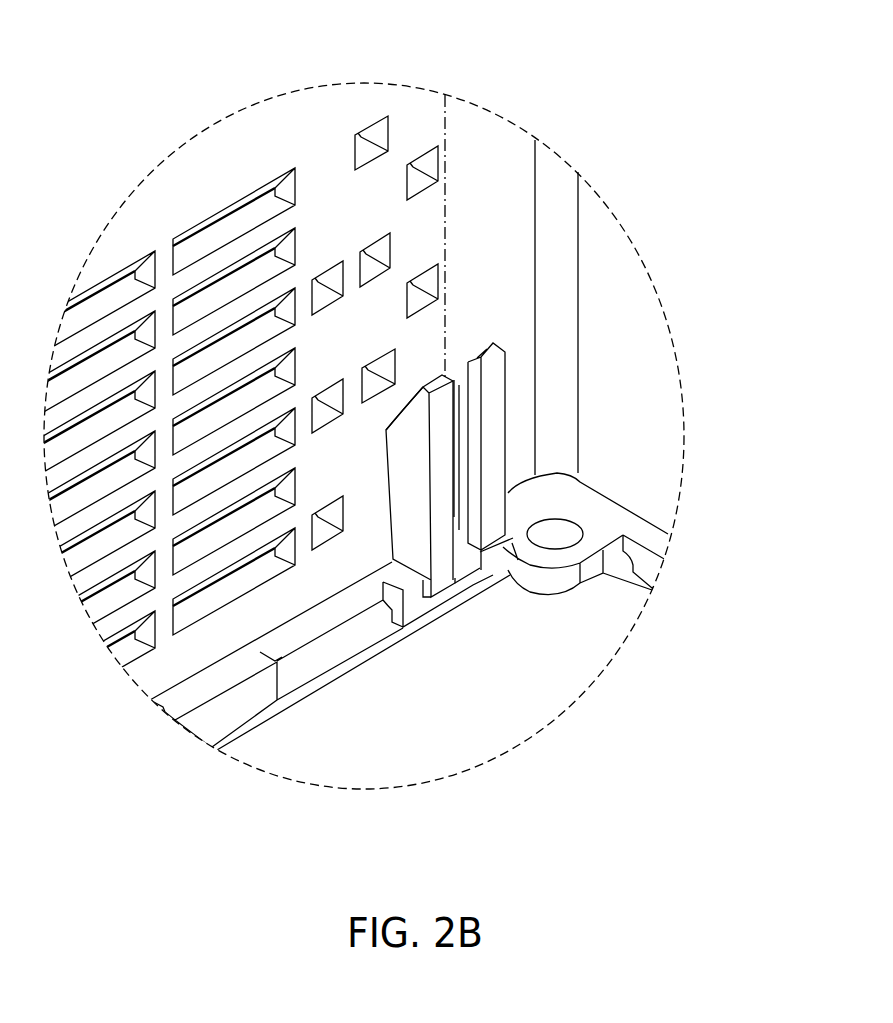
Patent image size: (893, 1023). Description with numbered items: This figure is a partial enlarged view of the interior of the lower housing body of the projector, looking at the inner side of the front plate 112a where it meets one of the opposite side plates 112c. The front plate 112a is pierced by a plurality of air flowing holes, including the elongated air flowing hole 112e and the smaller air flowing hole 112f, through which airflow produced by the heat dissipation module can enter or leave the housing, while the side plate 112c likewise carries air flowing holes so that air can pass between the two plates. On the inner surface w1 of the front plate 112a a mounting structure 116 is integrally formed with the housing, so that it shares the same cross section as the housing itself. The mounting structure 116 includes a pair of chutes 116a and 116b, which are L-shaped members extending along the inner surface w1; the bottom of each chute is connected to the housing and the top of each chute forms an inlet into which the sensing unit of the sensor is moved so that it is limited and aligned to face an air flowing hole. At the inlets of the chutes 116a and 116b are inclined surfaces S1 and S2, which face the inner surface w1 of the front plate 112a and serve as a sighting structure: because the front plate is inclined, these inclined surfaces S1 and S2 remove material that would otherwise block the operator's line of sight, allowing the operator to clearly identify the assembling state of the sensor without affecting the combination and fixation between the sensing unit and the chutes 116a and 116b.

The front plate 112a is at (418, 108).
The side plate 112c is at (642, 370).
The air flowing hole 112e is at (252, 576).
The air flowing hole 112f is at (325, 535).
The mounting structure 116 is at (598, 775).
The chute 116a is at (440, 553).
The chute 116b is at (515, 541).
The inner surface w1 is at (502, 221).
The inclined surface S1 is at (403, 398).
The inclined surface S2 is at (462, 380).